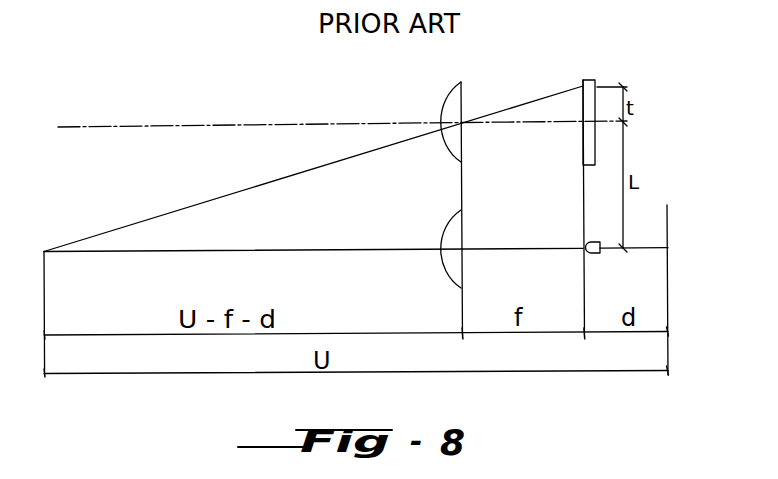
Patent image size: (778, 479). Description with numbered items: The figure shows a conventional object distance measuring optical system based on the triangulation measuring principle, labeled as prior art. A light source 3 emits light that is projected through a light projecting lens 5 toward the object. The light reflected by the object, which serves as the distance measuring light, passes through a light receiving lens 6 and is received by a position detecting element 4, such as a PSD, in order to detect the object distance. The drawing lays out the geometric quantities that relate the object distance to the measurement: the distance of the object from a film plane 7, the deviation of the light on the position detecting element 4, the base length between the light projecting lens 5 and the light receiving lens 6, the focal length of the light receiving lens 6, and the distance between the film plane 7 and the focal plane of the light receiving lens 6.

The light source 3 is at (600, 253).
The position detecting element 4 is at (597, 80).
The light projecting lens 5 is at (463, 283).
The light receiving lens 6 is at (462, 95).
The film plane 7 is at (667, 220).